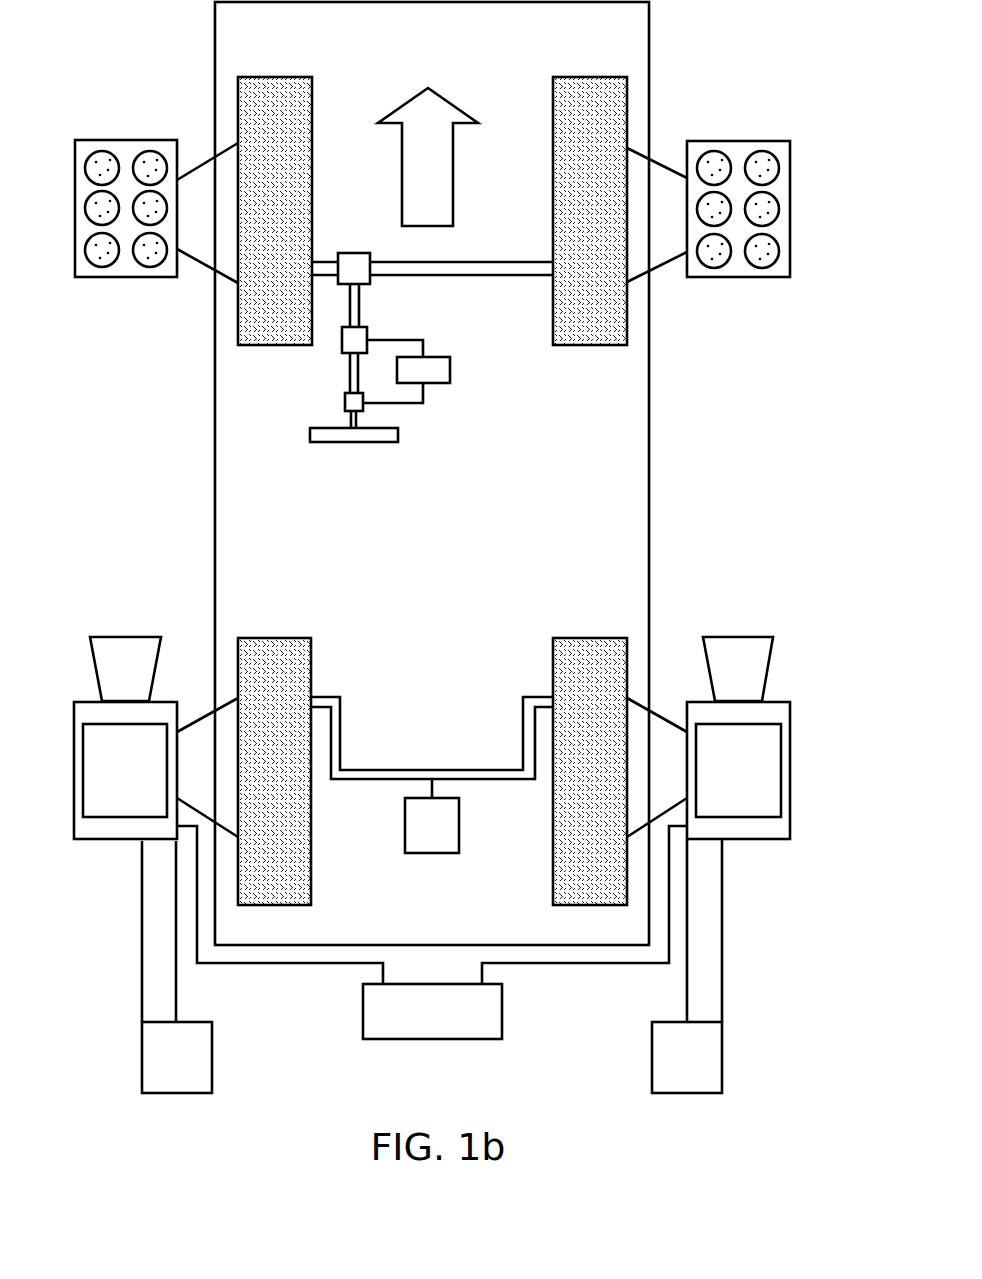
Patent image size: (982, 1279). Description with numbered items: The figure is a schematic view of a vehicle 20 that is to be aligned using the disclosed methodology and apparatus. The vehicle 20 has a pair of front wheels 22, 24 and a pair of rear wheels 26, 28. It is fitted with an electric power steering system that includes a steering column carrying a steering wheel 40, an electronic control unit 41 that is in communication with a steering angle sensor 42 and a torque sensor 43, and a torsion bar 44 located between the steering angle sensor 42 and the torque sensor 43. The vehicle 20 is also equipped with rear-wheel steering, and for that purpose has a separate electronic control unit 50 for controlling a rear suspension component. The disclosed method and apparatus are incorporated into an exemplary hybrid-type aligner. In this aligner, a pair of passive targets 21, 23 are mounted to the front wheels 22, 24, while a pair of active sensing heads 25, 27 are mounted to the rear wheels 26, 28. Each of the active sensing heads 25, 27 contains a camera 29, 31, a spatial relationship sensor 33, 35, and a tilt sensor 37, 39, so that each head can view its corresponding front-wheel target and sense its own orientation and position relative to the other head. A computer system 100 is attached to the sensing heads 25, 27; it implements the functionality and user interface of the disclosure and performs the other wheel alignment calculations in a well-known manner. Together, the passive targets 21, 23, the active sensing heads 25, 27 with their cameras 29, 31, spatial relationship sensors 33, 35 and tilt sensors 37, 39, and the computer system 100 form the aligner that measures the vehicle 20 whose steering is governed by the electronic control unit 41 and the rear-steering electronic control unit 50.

The vehicle 20 is at (215, 508).
The passive target 21 is at (130, 140).
The front wheel 22 is at (283, 77).
The passive target 23 is at (740, 141).
The front wheel 24 is at (592, 77).
The active sensing head 25 is at (105, 839).
The rear wheel 26 is at (278, 638).
The active sensing head 27 is at (758, 839).
The rear wheel 28 is at (592, 638).
The camera 29 is at (127, 637).
The camera 31 is at (738, 637).
The spatial relationship sensor 33 is at (197, 1022).
The spatial relationship sensor 35 is at (668, 1022).
The tilt sensor 37 is at (157, 724).
The tilt sensor 39 is at (703, 724).
The steering wheel 40 is at (310, 430).
The electronic control unit 41 is at (450, 368).
The steering angle sensor 42 is at (367, 335).
The torque sensor 43 is at (345, 400).
The torsion bar 44 is at (350, 373).
The electronic control unit 50 is at (432, 816).
The computer system 100 is at (432, 932).